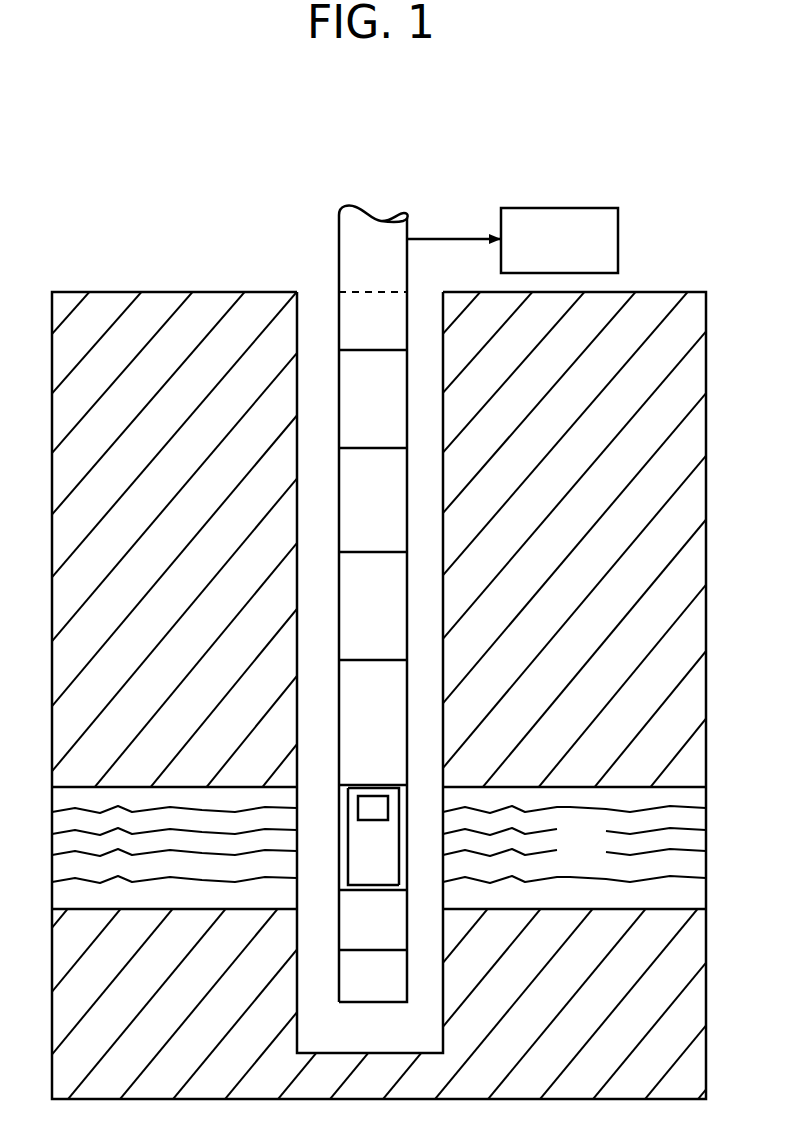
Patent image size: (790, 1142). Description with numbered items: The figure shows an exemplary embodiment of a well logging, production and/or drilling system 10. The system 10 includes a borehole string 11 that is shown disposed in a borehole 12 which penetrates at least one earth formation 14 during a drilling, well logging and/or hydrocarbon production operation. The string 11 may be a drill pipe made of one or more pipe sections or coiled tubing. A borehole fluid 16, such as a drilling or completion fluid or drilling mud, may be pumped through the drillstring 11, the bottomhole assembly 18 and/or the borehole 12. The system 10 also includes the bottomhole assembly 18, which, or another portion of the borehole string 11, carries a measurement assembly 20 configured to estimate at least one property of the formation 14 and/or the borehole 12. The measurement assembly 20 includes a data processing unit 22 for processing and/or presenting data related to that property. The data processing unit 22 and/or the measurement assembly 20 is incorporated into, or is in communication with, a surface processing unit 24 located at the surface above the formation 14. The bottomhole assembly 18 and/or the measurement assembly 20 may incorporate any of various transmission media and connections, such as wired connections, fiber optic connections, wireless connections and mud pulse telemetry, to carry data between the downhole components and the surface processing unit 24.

The well logging, production and/or drilling system 10 is at (150, 147).
The borehole string 11 is at (408, 495).
The borehole 12 is at (323, 315).
The earth formation 14 is at (597, 856).
The borehole fluid 16 is at (334, 388).
The bottomhole assembly 18 is at (401, 875).
The measurement assembly 20 is at (348, 868).
The data processing unit 22 is at (370, 808).
The surface processing unit 24 is at (618, 221).